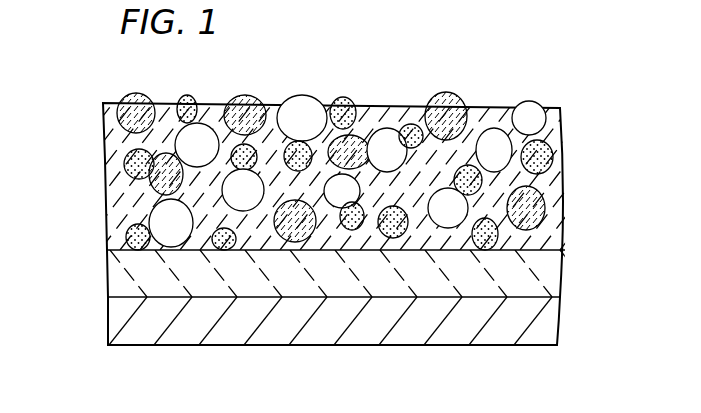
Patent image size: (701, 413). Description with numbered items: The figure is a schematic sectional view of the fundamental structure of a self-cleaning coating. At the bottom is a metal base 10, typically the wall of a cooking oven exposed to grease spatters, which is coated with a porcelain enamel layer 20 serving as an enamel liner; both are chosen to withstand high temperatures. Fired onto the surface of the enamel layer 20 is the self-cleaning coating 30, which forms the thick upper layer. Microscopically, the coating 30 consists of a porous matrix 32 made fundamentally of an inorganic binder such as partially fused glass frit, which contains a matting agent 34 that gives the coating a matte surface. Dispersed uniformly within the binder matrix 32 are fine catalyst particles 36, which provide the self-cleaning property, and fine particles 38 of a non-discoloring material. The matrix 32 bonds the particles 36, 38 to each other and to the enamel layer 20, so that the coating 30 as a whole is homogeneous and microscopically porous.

The metal base 10 is at (550, 322).
The porcelain enamel layer 20 is at (548, 272).
The self-cleaning coating 30 is at (103, 164).
The porous matrix 32 is at (545, 234).
The matting agent 34 is at (550, 157).
The catalyst particles 36 is at (540, 120).
The non-discoloring material particles 38 is at (540, 198).